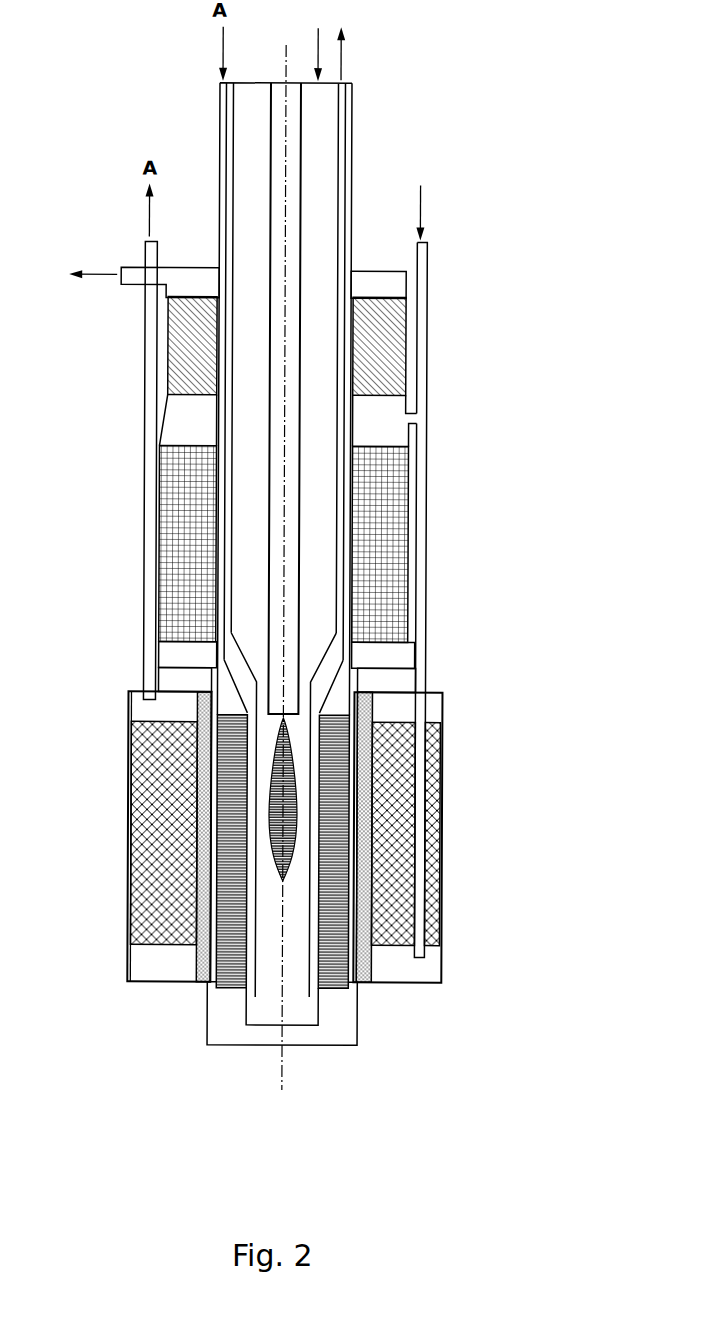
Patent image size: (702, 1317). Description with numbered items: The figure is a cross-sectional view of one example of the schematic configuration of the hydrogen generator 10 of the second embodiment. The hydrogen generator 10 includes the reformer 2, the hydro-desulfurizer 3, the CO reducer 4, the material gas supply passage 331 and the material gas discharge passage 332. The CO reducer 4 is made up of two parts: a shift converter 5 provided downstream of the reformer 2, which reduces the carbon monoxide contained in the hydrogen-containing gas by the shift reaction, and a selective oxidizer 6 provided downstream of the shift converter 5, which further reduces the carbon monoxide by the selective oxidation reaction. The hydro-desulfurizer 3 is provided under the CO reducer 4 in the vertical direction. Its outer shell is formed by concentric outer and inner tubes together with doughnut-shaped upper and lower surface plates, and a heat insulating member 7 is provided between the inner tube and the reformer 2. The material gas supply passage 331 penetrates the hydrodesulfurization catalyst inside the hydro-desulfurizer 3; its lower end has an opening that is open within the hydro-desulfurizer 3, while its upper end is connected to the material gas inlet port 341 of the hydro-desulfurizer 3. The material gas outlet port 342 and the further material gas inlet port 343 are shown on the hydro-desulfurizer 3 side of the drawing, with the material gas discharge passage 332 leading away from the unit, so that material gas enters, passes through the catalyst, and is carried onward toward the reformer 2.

The hydrogen generator 10 is at (477, 69).
The reformer 2 is at (342, 992).
The hydro-desulfurizer 3 is at (448, 846).
The CO reducer 4 is at (507, 350).
The shift converter 5 is at (405, 471).
The selective oxidizer 6 is at (404, 363).
The heat insulating member 7 is at (206, 968).
The material gas supply passage 331 is at (429, 628).
The material gas discharge passage 332 is at (146, 514).
The material gas inlet port 341 is at (444, 689).
The material gas outlet port 342 is at (136, 677).
The material gas inlet port 343 is at (236, 695).